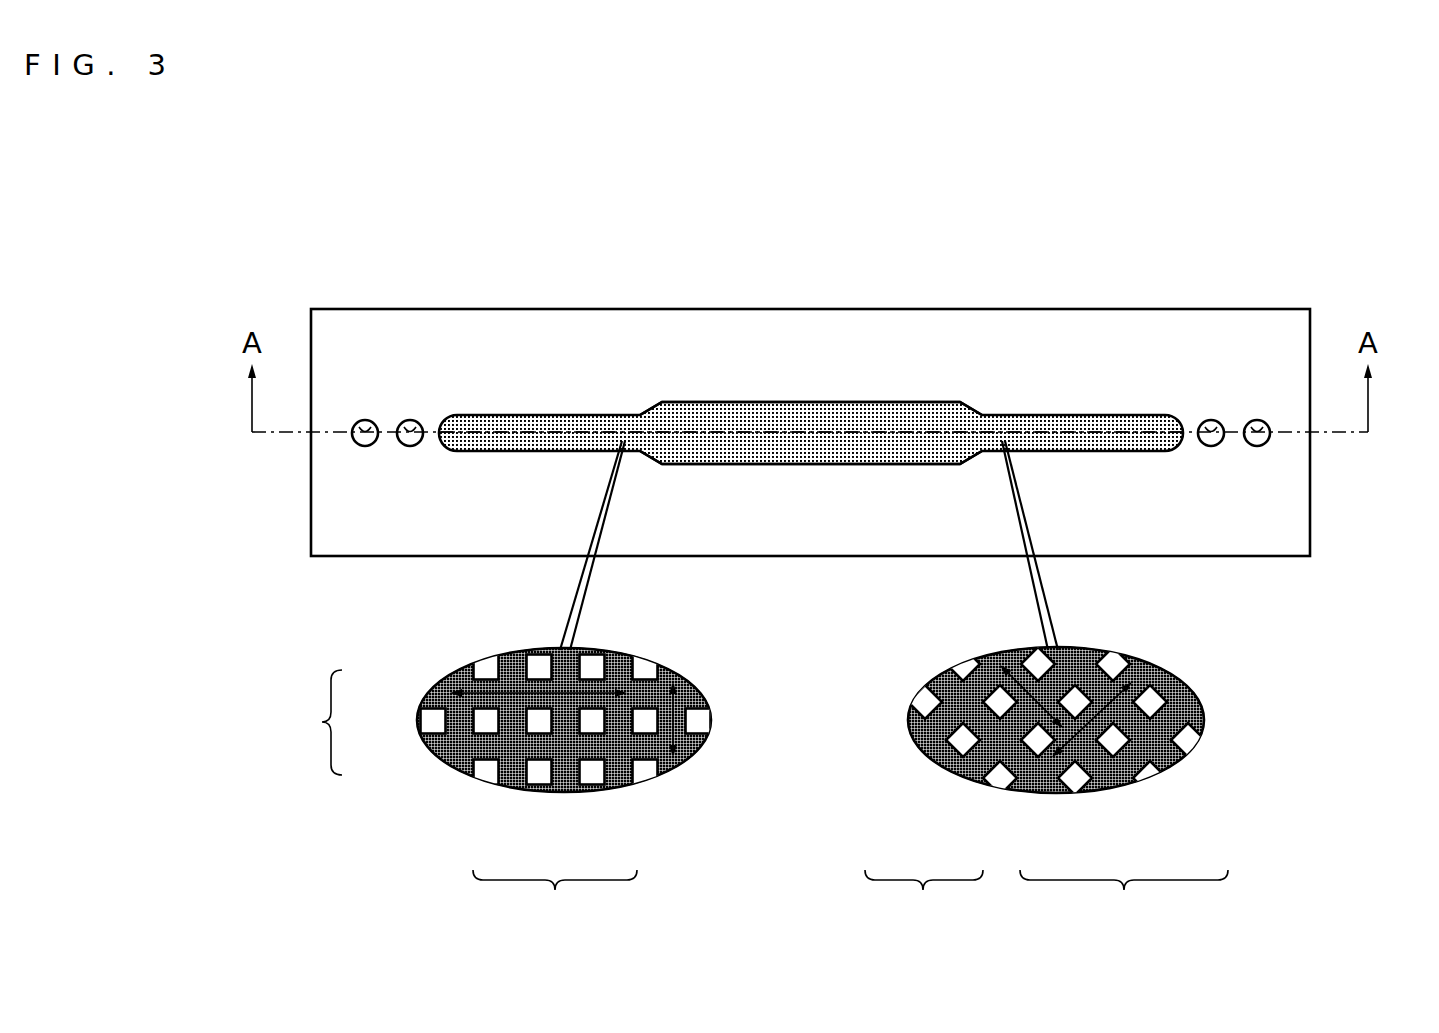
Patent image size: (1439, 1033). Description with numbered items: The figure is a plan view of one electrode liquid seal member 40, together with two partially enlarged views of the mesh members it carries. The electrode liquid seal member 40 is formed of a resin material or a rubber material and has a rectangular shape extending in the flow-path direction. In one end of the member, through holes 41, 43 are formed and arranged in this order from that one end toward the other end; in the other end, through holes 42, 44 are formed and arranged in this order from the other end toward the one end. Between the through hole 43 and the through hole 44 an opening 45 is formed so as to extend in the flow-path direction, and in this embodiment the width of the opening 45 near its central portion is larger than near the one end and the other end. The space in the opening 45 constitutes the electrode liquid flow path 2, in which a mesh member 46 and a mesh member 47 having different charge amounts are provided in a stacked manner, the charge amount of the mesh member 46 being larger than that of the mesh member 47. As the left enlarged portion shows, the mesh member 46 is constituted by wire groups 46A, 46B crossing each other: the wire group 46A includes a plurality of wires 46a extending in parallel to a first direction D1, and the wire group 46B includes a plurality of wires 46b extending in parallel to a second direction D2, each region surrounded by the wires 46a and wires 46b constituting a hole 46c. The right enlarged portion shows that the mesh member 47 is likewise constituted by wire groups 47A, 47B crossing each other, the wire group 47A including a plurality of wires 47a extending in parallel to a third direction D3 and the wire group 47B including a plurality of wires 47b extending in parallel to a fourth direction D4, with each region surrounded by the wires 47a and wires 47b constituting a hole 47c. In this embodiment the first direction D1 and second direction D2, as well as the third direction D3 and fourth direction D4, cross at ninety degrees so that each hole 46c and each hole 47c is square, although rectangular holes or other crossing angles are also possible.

The electrode liquid seal member 40 is at (1384, 211).
The electrode liquid flow path 2 is at (718, 412).
The through hole 41 is at (364, 421).
The through hole 42 is at (1256, 421).
The through hole 43 is at (409, 421).
The through hole 44 is at (1210, 421).
The opening 45 is at (940, 402).
The mesh member 46 is at (1073, 424).
The mesh member 47 is at (1016, 440).
The wire group 46A is at (306, 722).
The wire 46a is at (437, 695).
The wire group 46B is at (555, 897).
The wire 46b is at (513, 773).
The hole 46c is at (486, 665).
The wire group 47A is at (924, 897).
The wire 47a is at (943, 722).
The wire group 47B is at (1124, 897).
The wire 47b is at (1018, 757).
The hole 47c is at (965, 670).
The first direction D1 is at (533, 691).
The second direction D2 is at (685, 716).
The third direction D3 is at (1095, 697).
The fourth direction D4 is at (1030, 692).